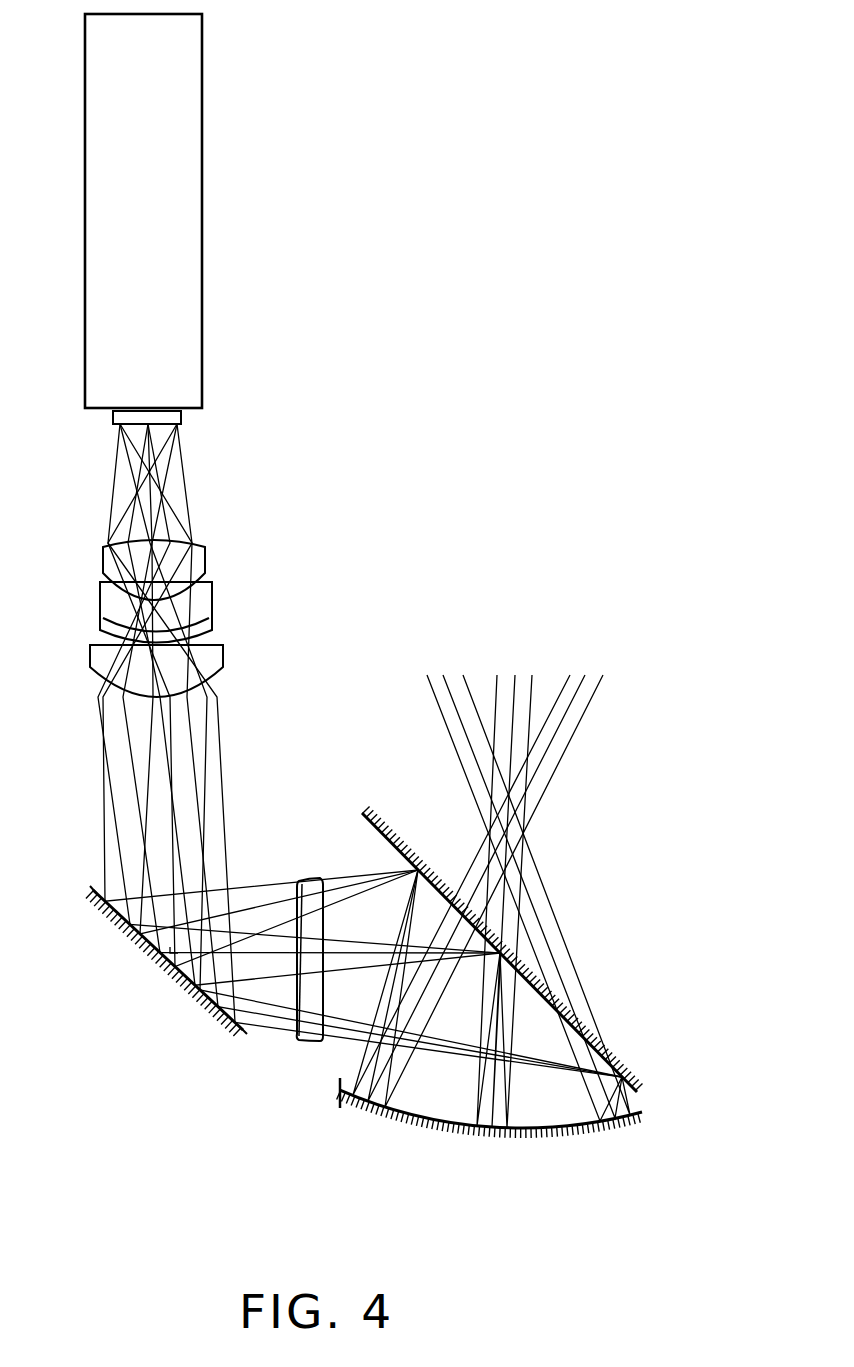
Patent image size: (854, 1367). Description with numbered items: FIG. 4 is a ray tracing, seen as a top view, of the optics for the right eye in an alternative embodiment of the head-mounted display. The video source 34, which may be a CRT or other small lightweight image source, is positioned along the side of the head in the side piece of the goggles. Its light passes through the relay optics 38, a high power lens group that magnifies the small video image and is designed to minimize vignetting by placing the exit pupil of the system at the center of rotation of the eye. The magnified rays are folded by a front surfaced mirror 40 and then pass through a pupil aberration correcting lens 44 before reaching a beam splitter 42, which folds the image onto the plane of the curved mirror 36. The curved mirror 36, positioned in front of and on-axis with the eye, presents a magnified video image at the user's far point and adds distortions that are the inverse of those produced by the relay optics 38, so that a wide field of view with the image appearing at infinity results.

The video source 34 is at (203, 166).
The relay optics 38 is at (217, 548).
The front surfaced mirror 40 is at (180, 988).
The pupil aberration correcting lens 44 is at (303, 877).
The beam splitter 42 is at (638, 1070).
The curved mirror 36 is at (623, 1132).